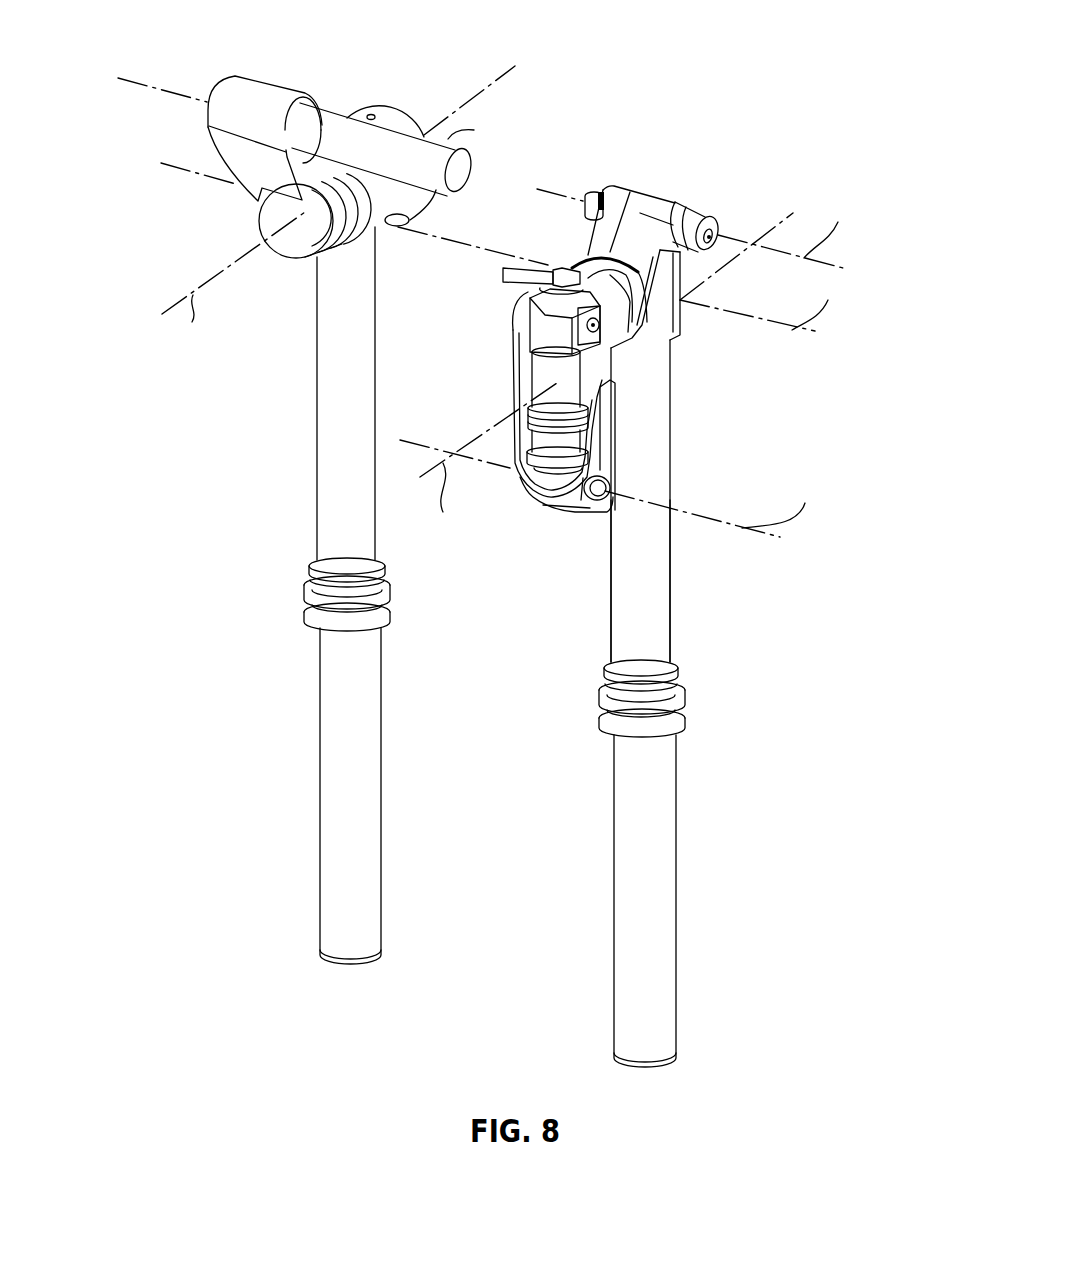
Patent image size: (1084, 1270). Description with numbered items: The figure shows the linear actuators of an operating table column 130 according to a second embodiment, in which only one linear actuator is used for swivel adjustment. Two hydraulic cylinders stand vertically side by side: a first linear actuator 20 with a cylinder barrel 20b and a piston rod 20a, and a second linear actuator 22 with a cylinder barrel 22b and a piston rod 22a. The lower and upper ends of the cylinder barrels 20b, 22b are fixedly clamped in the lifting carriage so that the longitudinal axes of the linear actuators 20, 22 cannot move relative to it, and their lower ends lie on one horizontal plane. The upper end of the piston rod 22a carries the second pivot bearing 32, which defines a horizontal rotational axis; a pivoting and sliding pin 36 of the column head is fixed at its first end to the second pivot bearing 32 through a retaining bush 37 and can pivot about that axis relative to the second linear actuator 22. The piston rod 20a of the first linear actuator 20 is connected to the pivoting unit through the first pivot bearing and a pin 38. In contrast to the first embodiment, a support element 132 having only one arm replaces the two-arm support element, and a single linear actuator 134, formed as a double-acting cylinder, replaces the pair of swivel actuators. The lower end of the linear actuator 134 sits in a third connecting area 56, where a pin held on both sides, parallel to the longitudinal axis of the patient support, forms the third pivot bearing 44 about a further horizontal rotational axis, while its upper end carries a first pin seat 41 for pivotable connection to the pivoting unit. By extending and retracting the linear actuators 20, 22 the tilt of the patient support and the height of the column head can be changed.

The first linear actuator 20 is at (695, 703).
The piston rod 20a is at (650, 610).
The cylinder barrel 20b is at (668, 820).
The second linear actuator 22 is at (299, 601).
The piston rod 22a is at (340, 443).
The cylinder barrel 22b is at (333, 730).
The second pivot bearing 32 is at (282, 218).
The pivoting and sliding pin 36 is at (447, 147).
The retaining bush 37 is at (272, 87).
The pin 38 is at (592, 188).
The first pin seat 41 is at (553, 275).
The third pivot bearing 44 is at (608, 498).
The third connecting area 56 is at (550, 505).
The operating table column 130 is at (220, 493).
The support element 132 is at (603, 428).
The linear actuator 134 is at (531, 391).